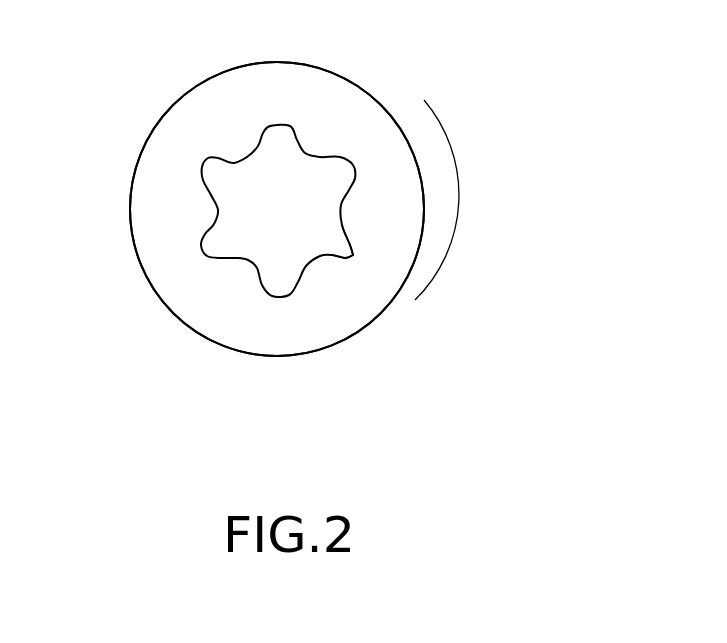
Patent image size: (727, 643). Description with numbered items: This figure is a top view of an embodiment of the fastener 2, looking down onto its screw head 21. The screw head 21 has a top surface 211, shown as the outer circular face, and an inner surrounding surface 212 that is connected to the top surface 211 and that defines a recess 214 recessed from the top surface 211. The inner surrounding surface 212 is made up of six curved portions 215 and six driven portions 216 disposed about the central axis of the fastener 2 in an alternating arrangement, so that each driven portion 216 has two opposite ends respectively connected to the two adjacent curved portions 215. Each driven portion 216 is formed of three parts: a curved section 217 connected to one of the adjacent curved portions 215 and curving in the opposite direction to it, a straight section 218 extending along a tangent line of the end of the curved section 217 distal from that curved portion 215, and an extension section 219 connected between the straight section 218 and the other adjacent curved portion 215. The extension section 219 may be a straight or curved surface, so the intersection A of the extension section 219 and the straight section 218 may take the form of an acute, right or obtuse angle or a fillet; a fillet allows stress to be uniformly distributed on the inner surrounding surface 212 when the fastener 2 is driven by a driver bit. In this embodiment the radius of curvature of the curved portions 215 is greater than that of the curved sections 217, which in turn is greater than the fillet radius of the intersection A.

The fastener 2 is at (422, 124).
The screw head 21 is at (436, 210).
The top surface 211 is at (409, 178).
The inner surrounding surface 212 is at (226, 236).
The recess 214 is at (250, 158).
The curved portions 215 is at (243, 263).
The driven portions 216 is at (270, 312).
The curved section 217 is at (355, 249).
The straight section 218 is at (352, 265).
The extension section 219 is at (342, 264).
The intersection A is at (359, 284).